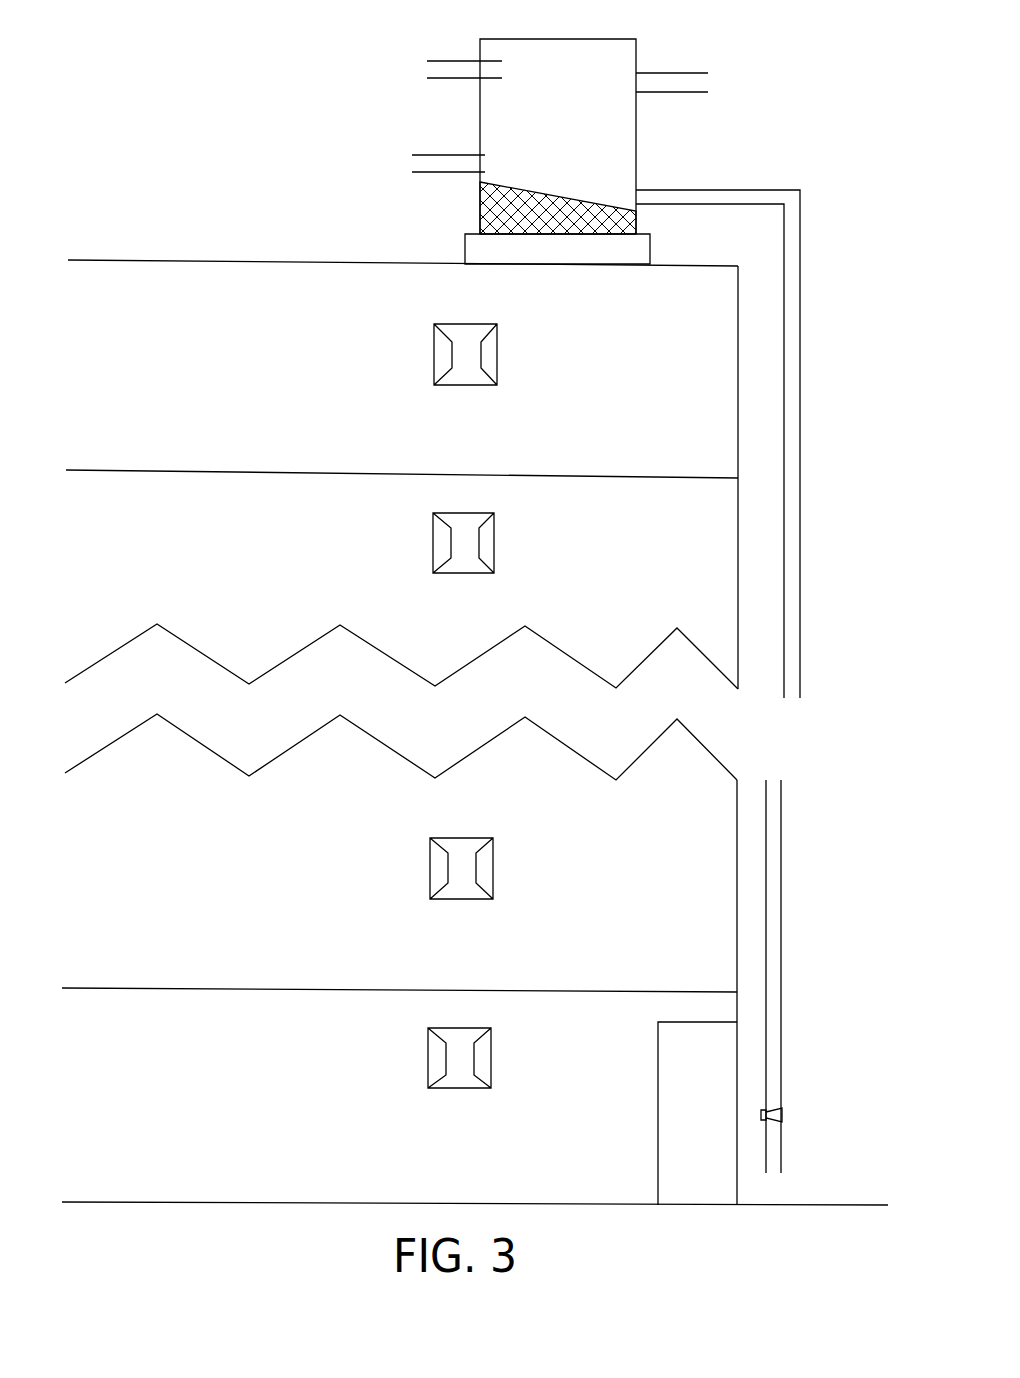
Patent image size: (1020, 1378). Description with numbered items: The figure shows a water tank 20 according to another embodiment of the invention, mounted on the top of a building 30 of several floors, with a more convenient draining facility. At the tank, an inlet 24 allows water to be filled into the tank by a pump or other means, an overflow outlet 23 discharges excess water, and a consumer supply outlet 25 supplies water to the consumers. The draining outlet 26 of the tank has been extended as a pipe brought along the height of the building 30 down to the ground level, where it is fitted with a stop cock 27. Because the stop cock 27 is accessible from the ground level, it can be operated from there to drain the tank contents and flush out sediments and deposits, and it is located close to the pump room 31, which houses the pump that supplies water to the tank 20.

The water tank 20 is at (636, 121).
The overflow outlet 23 is at (675, 73).
The inlet 24 is at (458, 61).
The consumer supply outlet 25 is at (440, 155).
The draining outlet 26 is at (800, 237).
The stop cock 27 is at (782, 1114).
The building 30 is at (737, 872).
The pump room 31 is at (688, 1053).